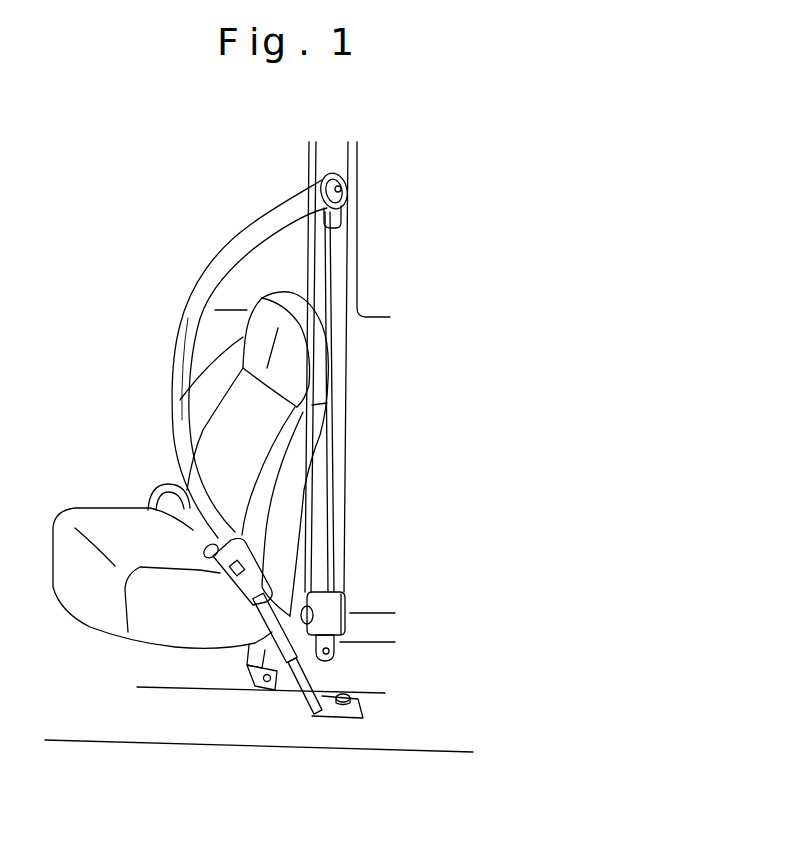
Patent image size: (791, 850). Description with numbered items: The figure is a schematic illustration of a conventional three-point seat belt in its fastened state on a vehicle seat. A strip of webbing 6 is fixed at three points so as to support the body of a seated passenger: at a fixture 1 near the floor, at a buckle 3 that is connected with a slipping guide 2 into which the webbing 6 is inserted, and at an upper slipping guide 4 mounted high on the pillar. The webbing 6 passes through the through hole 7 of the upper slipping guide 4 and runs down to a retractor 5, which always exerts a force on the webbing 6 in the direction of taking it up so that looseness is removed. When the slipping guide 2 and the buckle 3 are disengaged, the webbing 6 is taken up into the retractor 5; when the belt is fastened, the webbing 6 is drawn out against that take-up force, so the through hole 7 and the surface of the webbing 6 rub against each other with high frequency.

The fixture 1 is at (234, 688).
The slipping guide 2 is at (200, 572).
The buckle 3 is at (240, 595).
The upper slipping guide 4 is at (333, 212).
The retractor 5 is at (342, 613).
The webbing 6 is at (175, 336).
The through hole 7 is at (320, 187).